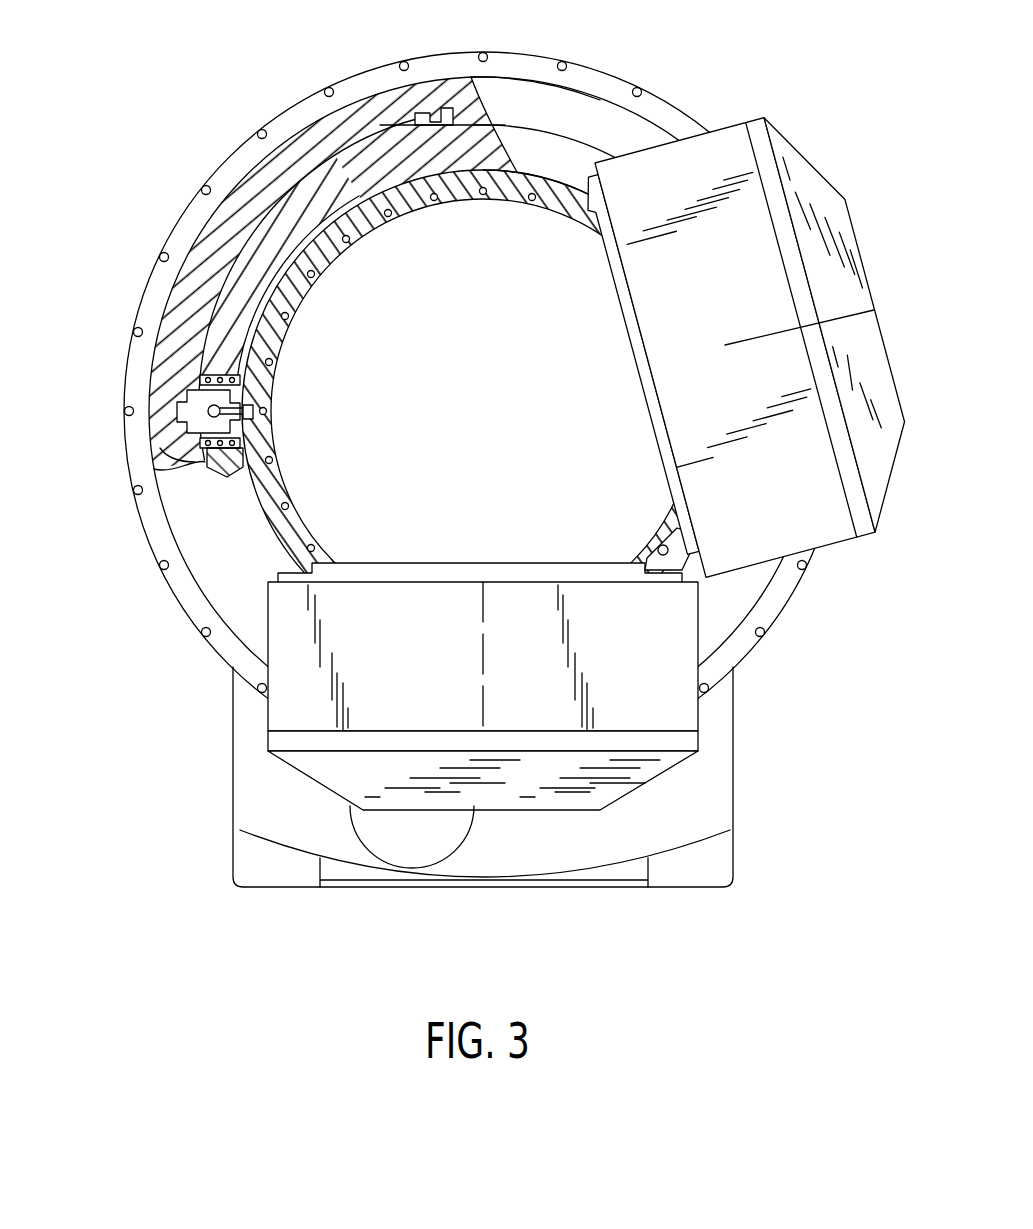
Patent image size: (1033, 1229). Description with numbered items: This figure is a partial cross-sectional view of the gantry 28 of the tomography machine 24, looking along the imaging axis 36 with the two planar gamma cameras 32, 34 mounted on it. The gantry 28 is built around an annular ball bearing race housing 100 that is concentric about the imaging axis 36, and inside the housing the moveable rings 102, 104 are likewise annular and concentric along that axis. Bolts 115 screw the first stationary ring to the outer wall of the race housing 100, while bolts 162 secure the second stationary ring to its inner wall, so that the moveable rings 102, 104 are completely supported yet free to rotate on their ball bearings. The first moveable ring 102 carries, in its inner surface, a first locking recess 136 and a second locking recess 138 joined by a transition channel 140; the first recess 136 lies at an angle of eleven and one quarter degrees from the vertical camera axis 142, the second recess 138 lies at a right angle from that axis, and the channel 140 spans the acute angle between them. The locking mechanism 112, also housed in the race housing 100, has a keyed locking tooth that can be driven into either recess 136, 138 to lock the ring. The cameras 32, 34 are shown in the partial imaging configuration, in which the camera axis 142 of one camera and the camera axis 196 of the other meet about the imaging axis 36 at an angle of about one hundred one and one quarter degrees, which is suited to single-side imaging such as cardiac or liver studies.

The tomography machine 24 is at (150, 608).
The gantry 28 is at (628, 141).
The planar gamma camera 32 is at (753, 342).
The planar gamma camera 34 is at (483, 715).
The imaging axis 36 is at (485, 410).
The race housing 100 is at (444, 388).
The first moveable ring 102 is at (568, 121).
The second moveable ring 104 is at (562, 166).
The locking mechanism 112 is at (177, 381).
The bolts 115 is at (398, 63).
The first locking recess 136 is at (400, 125).
The second locking recess 138 is at (173, 466).
The transition channel 140 is at (283, 200).
The camera axis 142 is at (483, 625).
The bolts 162 is at (287, 260).
The camera axis 196 is at (727, 347).